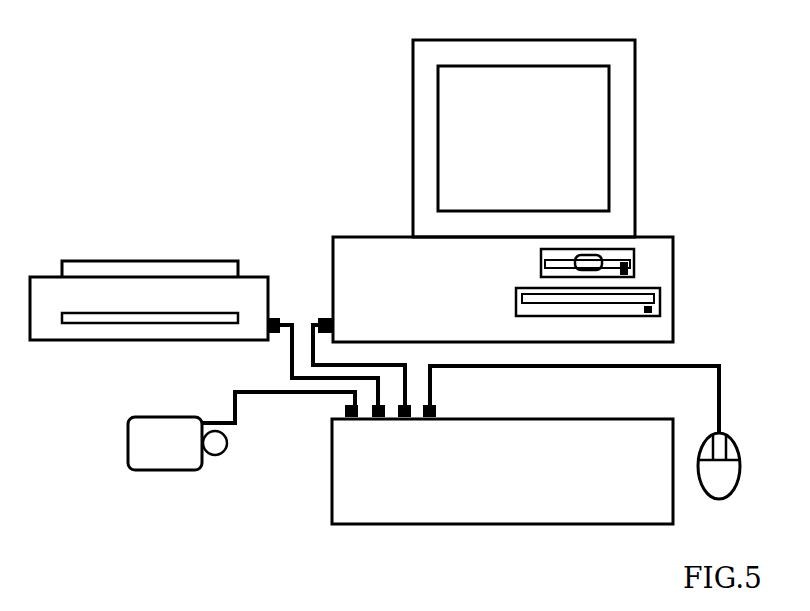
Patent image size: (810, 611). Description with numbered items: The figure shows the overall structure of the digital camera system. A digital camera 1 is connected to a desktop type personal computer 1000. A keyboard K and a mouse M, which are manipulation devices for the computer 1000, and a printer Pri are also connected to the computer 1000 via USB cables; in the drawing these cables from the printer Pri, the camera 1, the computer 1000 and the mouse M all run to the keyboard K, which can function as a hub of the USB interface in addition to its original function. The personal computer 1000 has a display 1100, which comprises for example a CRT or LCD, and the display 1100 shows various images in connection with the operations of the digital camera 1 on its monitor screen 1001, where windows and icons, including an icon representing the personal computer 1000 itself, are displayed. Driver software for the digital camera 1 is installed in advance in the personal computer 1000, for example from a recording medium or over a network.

The monitor screen 1001 is at (585, 93).
The display 1100 is at (635, 128).
The personal computer 1000 is at (673, 274).
The printer Pri is at (113, 260).
The digital camera 1 is at (150, 423).
The mouse M is at (740, 478).
The keyboard K is at (590, 513).